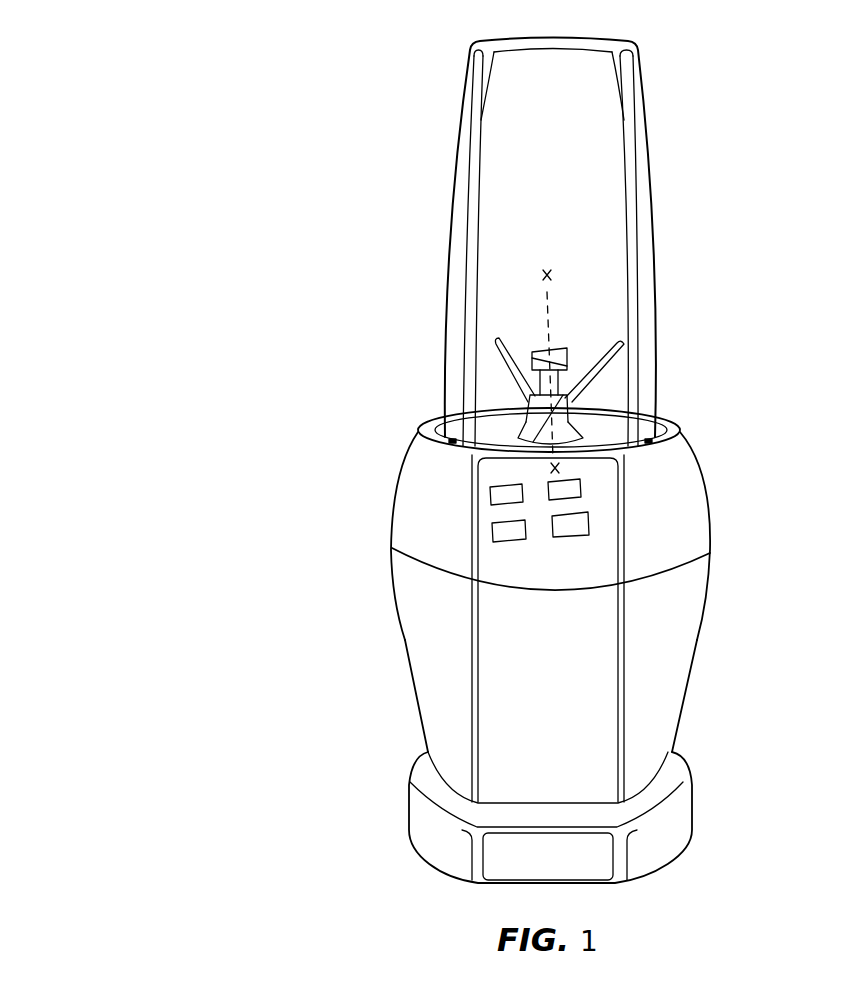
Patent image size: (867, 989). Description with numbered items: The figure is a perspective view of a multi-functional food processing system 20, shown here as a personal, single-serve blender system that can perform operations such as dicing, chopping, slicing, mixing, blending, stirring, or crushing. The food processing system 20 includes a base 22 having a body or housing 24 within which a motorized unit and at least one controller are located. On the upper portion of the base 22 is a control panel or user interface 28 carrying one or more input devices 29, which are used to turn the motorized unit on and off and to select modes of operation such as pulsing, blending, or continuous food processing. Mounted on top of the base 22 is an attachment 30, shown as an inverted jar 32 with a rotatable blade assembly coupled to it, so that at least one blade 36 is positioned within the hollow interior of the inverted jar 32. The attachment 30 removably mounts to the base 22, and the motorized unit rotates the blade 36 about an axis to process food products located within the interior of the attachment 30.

The food processing system 20 is at (262, 178).
The base 22 is at (350, 600).
The body or housing 24 is at (647, 630).
The control panel or user interface 28 is at (598, 493).
The input devices 29 is at (508, 532).
The attachment 30 is at (687, 272).
The inverted jar 32 is at (647, 197).
The blade 36 is at (612, 368).